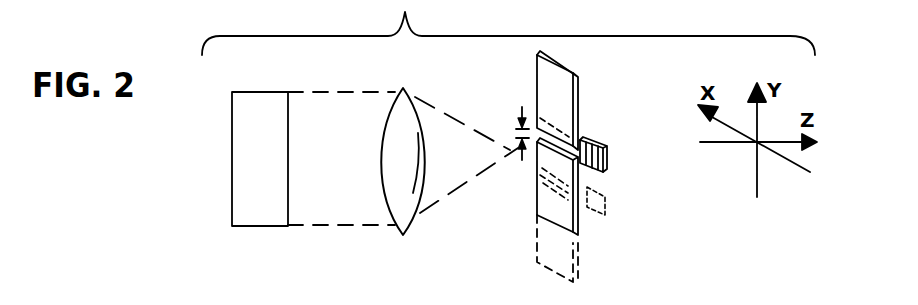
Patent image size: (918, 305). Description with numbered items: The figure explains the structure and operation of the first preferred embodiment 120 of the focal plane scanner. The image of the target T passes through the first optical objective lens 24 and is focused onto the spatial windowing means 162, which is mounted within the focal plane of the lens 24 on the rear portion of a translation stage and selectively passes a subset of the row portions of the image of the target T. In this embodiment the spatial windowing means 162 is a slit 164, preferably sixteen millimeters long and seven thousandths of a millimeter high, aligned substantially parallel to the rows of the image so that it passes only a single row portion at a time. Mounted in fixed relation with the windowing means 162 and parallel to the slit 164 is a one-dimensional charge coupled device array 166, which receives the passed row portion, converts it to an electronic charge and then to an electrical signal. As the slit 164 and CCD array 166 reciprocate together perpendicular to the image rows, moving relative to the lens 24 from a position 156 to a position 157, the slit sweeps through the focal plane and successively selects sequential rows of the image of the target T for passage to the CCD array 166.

The target T is at (233, 113).
The first preferred embodiment 120 is at (392, 72).
The first optical objective lens 24 is at (404, 220).
The position 156 is at (522, 83).
The spatial windowing means 162 is at (579, 62).
The slit 164 is at (506, 130).
The position 157 is at (580, 257).
The one-dimensional charge coupled device (CCD) array 166 is at (607, 161).